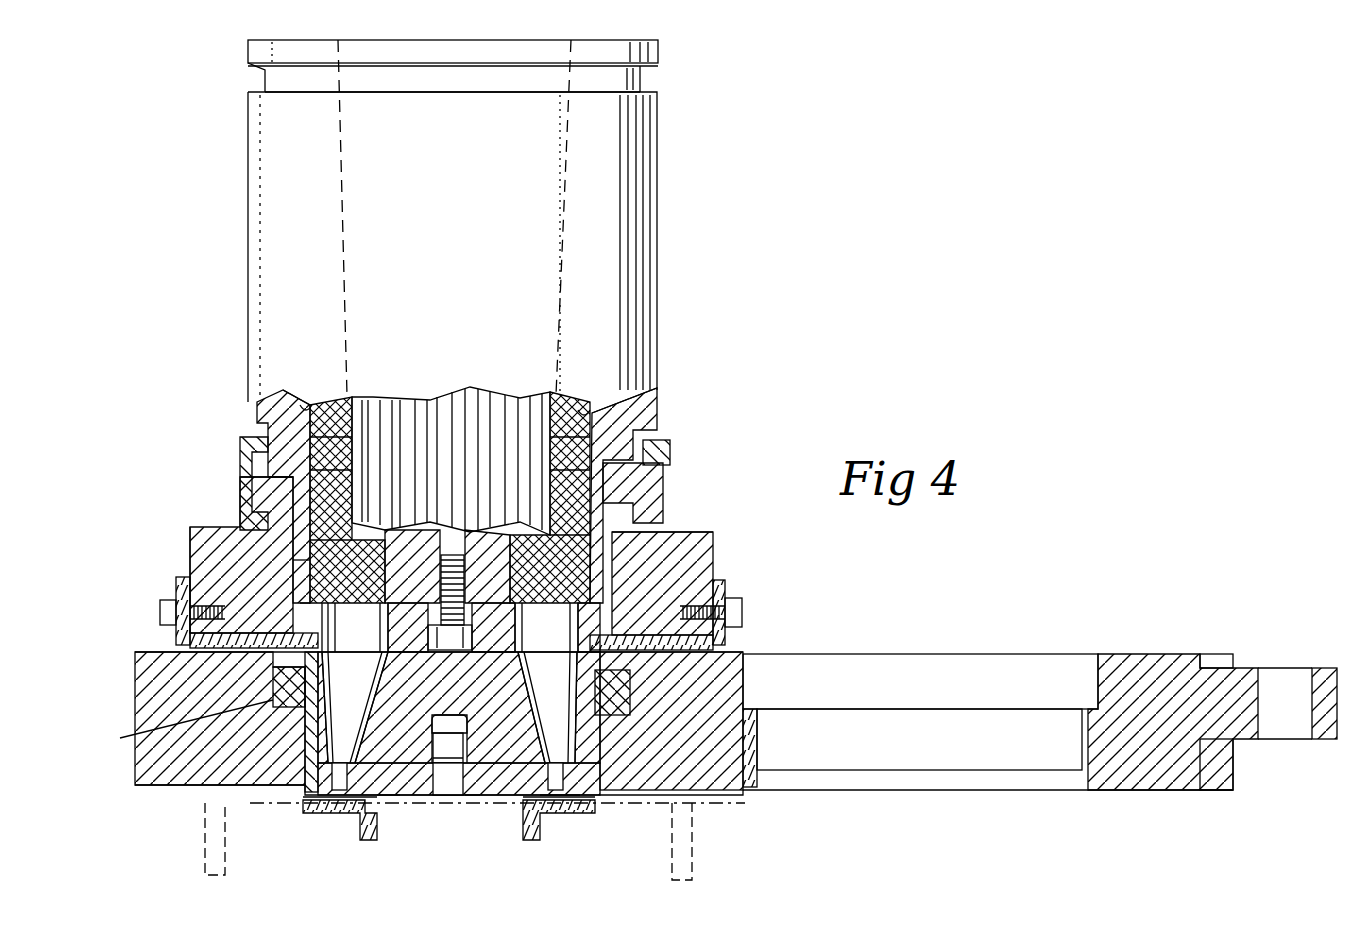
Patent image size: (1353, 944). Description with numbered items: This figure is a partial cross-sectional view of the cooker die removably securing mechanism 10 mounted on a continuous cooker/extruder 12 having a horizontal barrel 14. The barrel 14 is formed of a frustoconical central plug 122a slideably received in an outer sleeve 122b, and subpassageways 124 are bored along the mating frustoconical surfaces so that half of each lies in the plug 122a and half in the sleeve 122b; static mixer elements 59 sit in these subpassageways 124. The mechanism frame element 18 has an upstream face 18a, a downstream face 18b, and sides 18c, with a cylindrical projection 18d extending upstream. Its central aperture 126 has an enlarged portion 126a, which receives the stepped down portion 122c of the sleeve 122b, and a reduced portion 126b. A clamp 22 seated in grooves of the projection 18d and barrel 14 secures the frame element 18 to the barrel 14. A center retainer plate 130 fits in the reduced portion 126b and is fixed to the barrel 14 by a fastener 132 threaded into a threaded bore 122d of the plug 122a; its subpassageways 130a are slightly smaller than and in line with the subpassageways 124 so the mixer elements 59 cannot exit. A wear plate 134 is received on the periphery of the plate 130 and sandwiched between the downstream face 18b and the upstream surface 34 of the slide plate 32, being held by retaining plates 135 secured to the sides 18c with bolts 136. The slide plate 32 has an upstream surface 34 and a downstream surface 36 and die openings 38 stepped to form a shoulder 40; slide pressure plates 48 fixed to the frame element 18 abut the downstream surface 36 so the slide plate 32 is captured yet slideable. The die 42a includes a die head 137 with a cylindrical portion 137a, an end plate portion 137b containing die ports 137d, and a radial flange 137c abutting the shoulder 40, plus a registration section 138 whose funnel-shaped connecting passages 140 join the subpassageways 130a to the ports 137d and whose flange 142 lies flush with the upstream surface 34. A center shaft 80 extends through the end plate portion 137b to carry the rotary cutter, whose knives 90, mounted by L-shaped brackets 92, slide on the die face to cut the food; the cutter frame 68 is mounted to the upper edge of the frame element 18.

The mechanism 10 is at (795, 140).
The cooker/extruder 12 is at (678, 133).
The barrel 14 is at (248, 152).
The mechanism frame element 18 is at (186, 523).
The upstream face 18a is at (232, 515).
The downstream face 18b is at (195, 667).
The sides 18c is at (190, 530).
The cylindrical projection 18d is at (240, 452).
The clamp 22 is at (660, 440).
The slide plate 32 is at (1238, 665).
The upstream surface 34 is at (1140, 654).
The downstream surface 36 is at (1118, 792).
The die openings 38 is at (932, 660).
The shoulder 40 is at (1093, 707).
The first die 42a is at (472, 800).
The slide pressure plates 48 is at (600, 797).
The mixer elements 59 is at (312, 402).
The cutter frame 68 is at (700, 858).
The center shaft 80 is at (355, 683).
The knives 90 is at (340, 815).
The L-shaped brackets 92 is at (370, 842).
The central plug 122a is at (262, 410).
The outer sleeve 122b is at (660, 192).
The stepped down portion 122c is at (298, 572).
The threaded bore 122d is at (412, 398).
The subpassageways 124 is at (333, 398).
The central aperture 126 is at (637, 527).
The enlarged portion 126a is at (672, 458).
The reduced portion 126b is at (300, 605).
The center retainer plate 130 is at (713, 565).
The subpassageways 130a is at (700, 533).
The fastener 132 is at (470, 390).
The wear plate 134 is at (620, 660).
The retaining plates 135 is at (606, 622).
The bolts 136 is at (742, 612).
The die head 137 is at (291, 797).
The cylindrical portion 137a is at (283, 755).
The end plate portion 137b is at (388, 812).
The radial flange 137c is at (272, 682).
The die ports 137d is at (557, 797).
The registration section 138 is at (450, 662).
The connecting passages 140 is at (590, 770).
The flange 142 is at (635, 672).